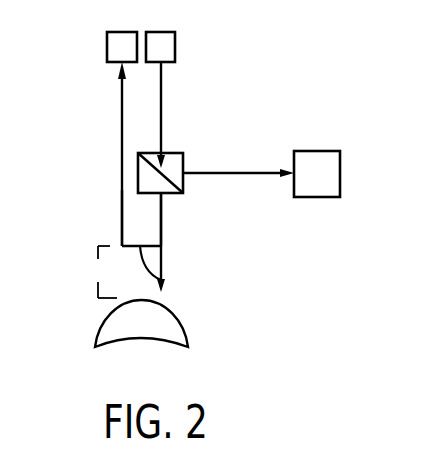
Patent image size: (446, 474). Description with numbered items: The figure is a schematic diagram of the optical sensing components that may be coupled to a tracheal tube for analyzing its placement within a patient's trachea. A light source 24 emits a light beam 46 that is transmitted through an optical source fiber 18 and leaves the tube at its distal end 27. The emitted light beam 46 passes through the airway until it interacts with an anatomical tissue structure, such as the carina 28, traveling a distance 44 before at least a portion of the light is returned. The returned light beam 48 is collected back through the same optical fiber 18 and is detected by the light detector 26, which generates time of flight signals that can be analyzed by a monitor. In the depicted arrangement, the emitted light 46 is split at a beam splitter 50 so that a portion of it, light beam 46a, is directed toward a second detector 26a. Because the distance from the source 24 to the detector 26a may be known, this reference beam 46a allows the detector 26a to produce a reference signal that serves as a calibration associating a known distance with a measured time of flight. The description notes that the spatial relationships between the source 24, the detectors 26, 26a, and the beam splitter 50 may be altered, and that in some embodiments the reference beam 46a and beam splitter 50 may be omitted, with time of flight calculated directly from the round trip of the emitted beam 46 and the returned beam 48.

The light source 24 is at (175, 47).
The light detector 26 is at (107, 48).
The detector 26a is at (313, 197).
The light beam 46 is at (161, 100).
The light beam 46a is at (262, 171).
The beam splitter 50 is at (183, 158).
The optical source fiber 18 is at (122, 198).
The returned light beam 48 is at (122, 228).
The distance 44 is at (92, 273).
The distal end 27 is at (163, 268).
The carina 28 is at (183, 320).